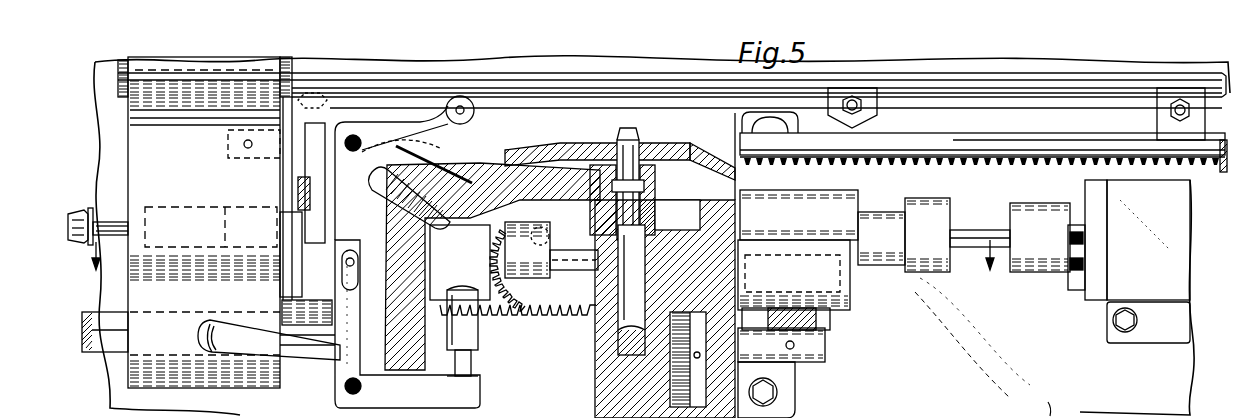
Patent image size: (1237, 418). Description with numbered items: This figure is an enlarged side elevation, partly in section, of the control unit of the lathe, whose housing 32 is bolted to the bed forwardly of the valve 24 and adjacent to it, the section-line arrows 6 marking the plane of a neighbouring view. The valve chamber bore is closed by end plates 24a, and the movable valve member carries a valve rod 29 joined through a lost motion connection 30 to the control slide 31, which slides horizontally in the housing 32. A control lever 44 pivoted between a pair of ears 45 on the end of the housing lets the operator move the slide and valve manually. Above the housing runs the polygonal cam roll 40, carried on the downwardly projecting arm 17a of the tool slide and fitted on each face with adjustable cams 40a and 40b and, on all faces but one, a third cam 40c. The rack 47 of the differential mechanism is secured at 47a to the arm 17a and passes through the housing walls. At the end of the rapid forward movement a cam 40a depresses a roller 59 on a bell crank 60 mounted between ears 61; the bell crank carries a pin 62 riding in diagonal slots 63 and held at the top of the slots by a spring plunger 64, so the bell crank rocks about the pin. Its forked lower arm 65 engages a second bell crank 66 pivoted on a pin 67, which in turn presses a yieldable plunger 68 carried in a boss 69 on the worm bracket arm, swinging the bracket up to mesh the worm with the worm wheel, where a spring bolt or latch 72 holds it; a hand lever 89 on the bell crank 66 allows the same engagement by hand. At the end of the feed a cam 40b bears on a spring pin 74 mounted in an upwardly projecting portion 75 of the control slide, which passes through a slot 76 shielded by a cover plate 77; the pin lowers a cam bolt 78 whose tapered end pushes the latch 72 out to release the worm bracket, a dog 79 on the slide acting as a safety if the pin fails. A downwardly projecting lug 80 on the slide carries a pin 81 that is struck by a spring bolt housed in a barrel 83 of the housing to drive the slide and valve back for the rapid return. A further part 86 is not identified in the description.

The section line arrow 6 is at (541, 270).
The downwardly projecting arm 17a is at (199, 222).
The valve 24 is at (1170, 240).
The end plates 24a is at (1095, 292).
The valve rod 29 is at (965, 232).
The lost motion connection 30 is at (935, 273).
The control slide 31 is at (885, 252).
The housing 32 is at (792, 390).
The cam roll 40 is at (1050, 83).
The cam 40a is at (862, 122).
The cam 40b is at (1157, 113).
The third cam 40c is at (312, 92).
The control lever 44 is at (832, 322).
The ears 45 is at (810, 348).
The rack 47 is at (955, 134).
The rack securing point 47a is at (244, 145).
The roller 59 is at (474, 118).
The bell crank 60 is at (440, 141).
The ears 61 is at (432, 166).
The pin 62 is at (353, 151).
The diagonal slots 63 is at (362, 152).
The spring plunger 64 is at (380, 186).
The fork 65 is at (345, 266).
The second bell crank 66 is at (345, 358).
The pin 67 is at (340, 392).
The yieldable plunger 68 is at (472, 360).
The boss 69 is at (480, 330).
The spring bolt 72 is at (618, 340).
The spring pin 74 is at (639, 138).
The upwardly projecting portion 75 is at (668, 183).
The slot 76 is at (680, 205).
The cover plate 77 is at (560, 146).
The cam bolt 78 is at (625, 305).
The dog 79 is at (548, 240).
The downwardly projecting lug 80 is at (505, 236).
The laterally projecting pin 81 is at (519, 282).
The barrel 83 is at (842, 305).
The guide block 86 is at (293, 237).
The hand lever 89 is at (228, 332).